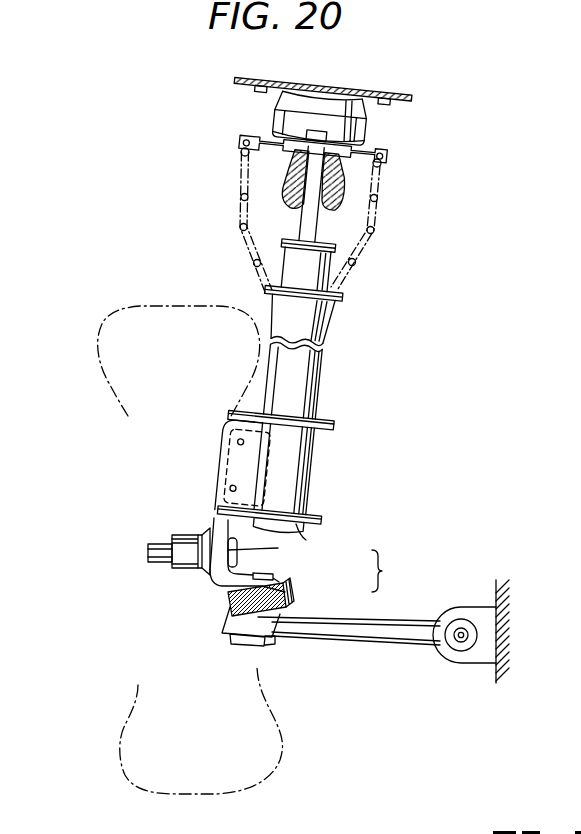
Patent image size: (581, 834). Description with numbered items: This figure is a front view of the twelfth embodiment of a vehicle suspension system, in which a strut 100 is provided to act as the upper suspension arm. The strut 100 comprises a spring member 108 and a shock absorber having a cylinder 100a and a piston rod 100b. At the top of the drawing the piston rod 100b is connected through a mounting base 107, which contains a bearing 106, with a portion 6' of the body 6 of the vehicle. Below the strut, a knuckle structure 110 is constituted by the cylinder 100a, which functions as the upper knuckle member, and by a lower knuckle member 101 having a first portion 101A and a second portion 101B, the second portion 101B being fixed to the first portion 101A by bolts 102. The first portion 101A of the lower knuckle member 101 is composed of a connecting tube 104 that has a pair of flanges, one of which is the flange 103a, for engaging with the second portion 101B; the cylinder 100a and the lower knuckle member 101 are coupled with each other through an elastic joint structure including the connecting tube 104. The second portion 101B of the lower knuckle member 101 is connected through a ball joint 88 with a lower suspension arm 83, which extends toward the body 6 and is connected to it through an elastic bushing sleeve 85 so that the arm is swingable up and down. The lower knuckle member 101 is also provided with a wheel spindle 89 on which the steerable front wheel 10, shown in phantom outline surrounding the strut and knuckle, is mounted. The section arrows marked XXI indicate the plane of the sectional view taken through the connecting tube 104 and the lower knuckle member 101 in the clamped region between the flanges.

The portion of the body 6' is at (323, 79).
The mounting base 107 is at (272, 122).
The bearing 106 is at (365, 146).
The spring member 108 is at (240, 229).
The piston rod 100b is at (320, 228).
The strut 100 is at (345, 310).
The cylinder 100a is at (302, 398).
The connecting tube 104 is at (318, 447).
The knuckle structure 110 is at (350, 416).
The flange 103a is at (243, 424).
The bolts 102 is at (237, 441).
The first portion 101A is at (302, 533).
The second portion 101B is at (278, 548).
The lower knuckle member 101 is at (395, 571).
The ball joint 88 is at (228, 598).
The wheel spindle 89 is at (152, 568).
The lower suspension arm 83 is at (342, 646).
The elastic bushing sleeve 85 is at (460, 644).
The body 6 is at (527, 631).
The steerable front wheel 10 is at (100, 350).
The section line XXI is at (204, 465).